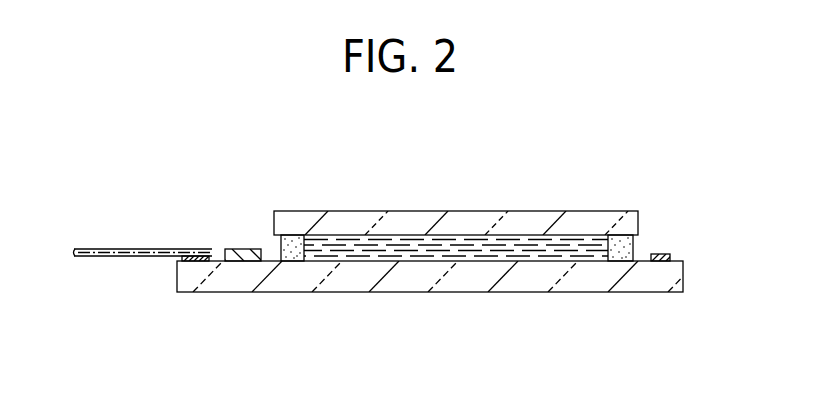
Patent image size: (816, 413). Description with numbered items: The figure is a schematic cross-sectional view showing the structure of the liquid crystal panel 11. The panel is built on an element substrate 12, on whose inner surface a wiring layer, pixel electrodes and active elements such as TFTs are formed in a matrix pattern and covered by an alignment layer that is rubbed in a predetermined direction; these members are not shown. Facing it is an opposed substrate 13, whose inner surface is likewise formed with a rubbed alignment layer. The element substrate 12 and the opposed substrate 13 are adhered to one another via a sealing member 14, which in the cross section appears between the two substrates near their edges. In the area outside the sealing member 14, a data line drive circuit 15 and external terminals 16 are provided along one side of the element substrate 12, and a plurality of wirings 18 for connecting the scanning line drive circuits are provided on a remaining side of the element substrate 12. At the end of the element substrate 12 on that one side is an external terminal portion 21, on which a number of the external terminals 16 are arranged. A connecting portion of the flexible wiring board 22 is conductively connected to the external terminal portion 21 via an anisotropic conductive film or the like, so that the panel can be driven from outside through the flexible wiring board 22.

The liquid crystal panel 11 is at (523, 150).
The element substrate 12 is at (338, 282).
The opposed substrate 13 is at (405, 220).
The sealing member 14 is at (618, 240).
The data line drive circuit 15 is at (250, 249).
The external terminals 16 is at (197, 249).
The wirings 18 is at (664, 254).
The external terminal portion 21 is at (219, 257).
The flexible wiring board 22 is at (120, 258).